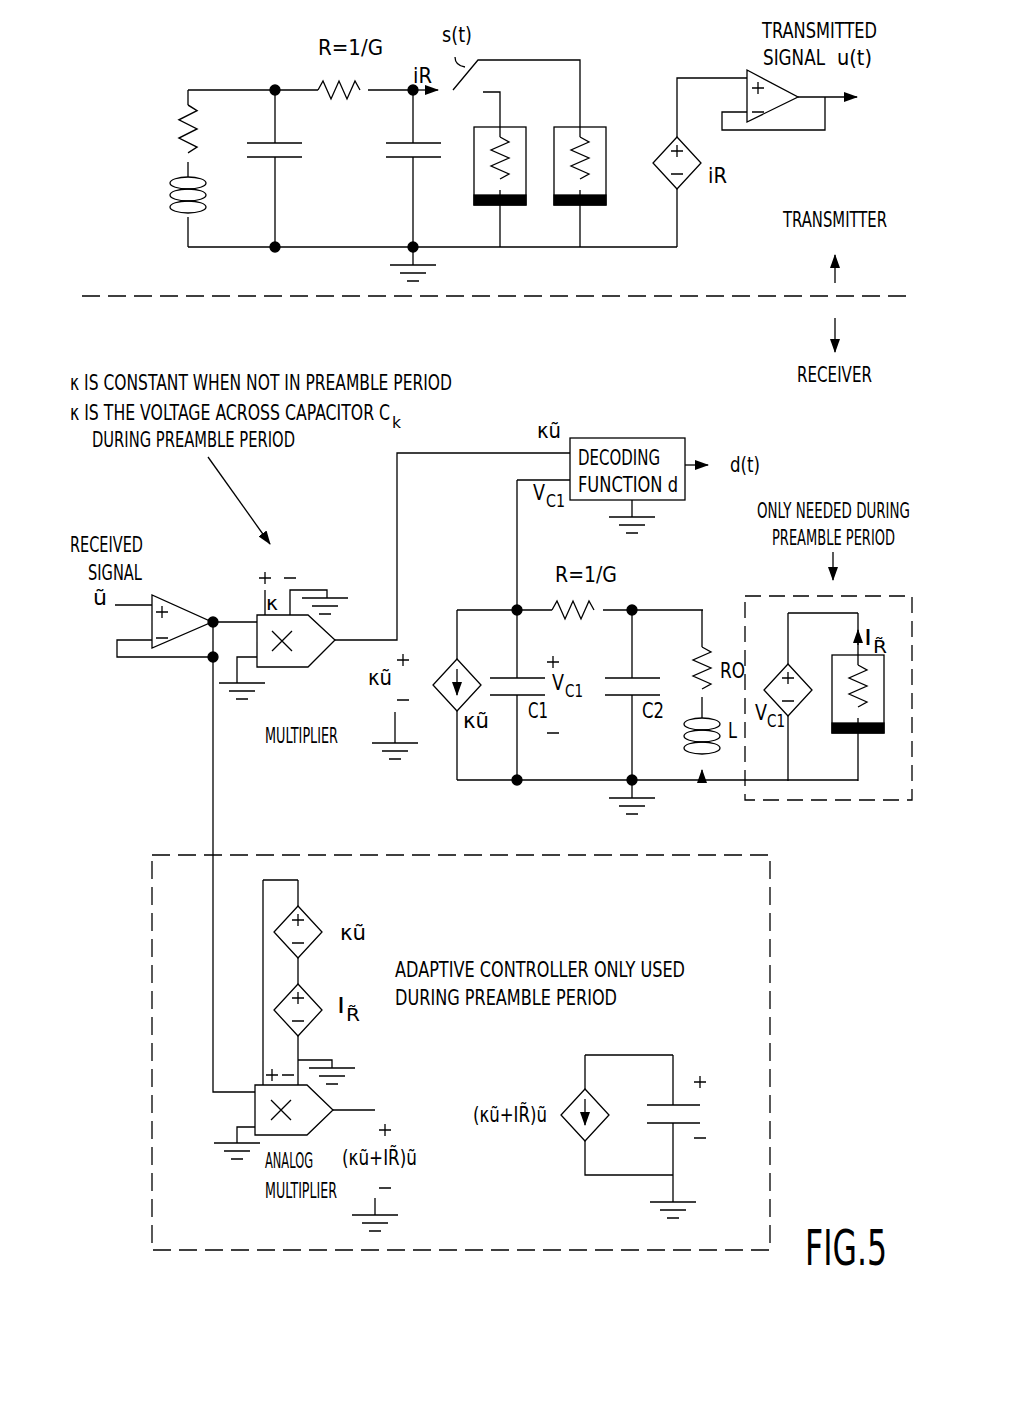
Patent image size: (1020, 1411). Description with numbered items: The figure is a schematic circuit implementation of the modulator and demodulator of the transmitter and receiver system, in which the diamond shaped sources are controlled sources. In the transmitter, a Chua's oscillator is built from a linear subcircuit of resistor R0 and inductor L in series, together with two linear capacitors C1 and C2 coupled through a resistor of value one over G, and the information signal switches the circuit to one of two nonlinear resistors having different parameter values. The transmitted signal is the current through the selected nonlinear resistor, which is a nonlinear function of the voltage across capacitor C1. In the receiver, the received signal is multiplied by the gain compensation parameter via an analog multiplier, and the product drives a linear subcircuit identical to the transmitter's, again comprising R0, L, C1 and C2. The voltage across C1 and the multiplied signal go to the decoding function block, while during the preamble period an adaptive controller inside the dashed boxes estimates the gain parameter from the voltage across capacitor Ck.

The linear resistor R0 is at (171, 129).
The linear inductor L is at (175, 195).
The capacitor C1 is at (411, 168).
The capacitor C2 is at (281, 168).
The capacitor Cκ Ck is at (647, 1115).